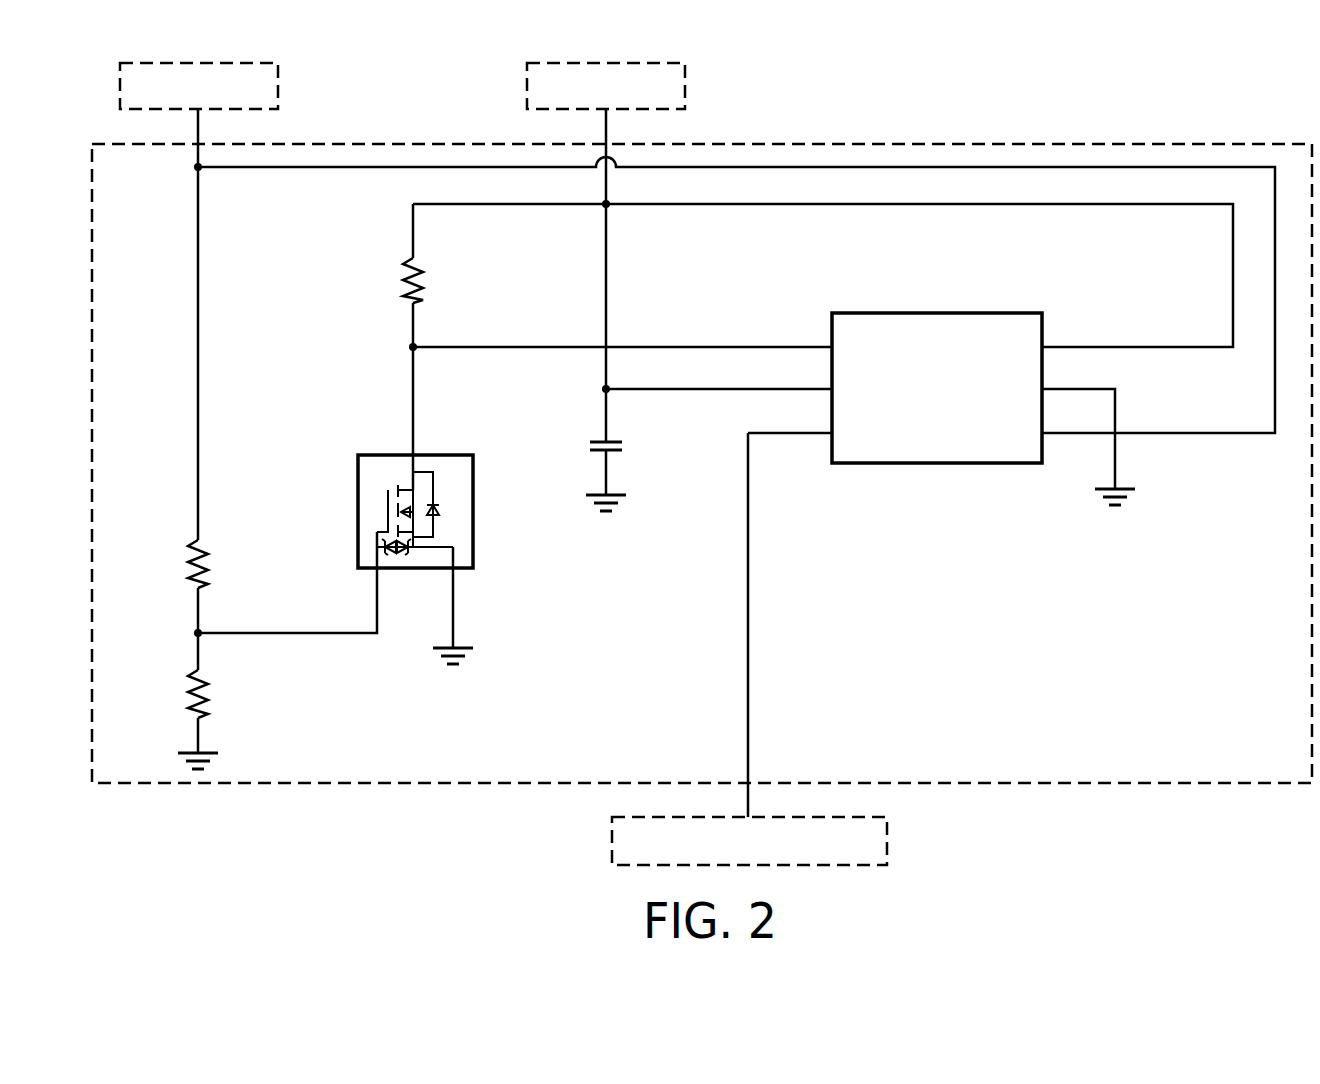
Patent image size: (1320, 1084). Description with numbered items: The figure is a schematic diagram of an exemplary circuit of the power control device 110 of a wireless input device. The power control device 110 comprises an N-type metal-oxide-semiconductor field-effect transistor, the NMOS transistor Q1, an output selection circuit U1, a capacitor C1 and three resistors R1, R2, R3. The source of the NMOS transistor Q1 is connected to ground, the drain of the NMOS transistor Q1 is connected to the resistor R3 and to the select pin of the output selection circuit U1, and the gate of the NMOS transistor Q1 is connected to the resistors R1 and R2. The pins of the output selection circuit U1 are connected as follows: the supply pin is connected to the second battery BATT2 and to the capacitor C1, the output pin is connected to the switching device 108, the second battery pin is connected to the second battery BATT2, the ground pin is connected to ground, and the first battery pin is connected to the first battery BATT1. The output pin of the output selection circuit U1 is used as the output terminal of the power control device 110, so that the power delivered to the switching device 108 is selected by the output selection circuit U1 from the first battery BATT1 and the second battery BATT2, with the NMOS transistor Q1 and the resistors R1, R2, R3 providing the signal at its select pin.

The power control device 110 is at (935, 140).
The switching device 108 is at (890, 838).
The first battery BATT1 is at (199, 86).
The second battery BATT2 is at (606, 86).
The resistor R1 is at (216, 558).
The resistor R2 is at (216, 688).
The resistor R3 is at (424, 278).
The capacitor C1 is at (630, 447).
The NMOS transistor Q1 is at (473, 510).
The output selection circuit U1 is at (937, 312).